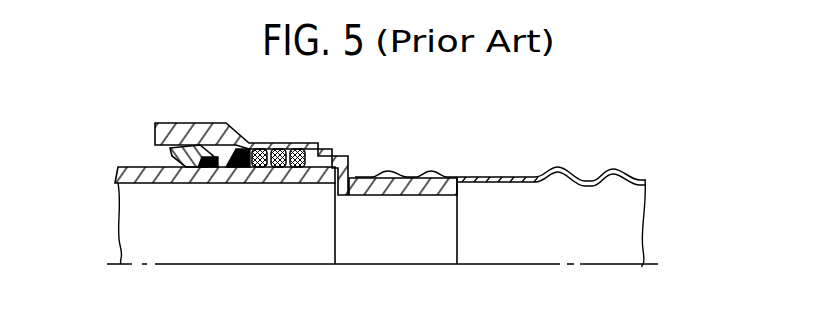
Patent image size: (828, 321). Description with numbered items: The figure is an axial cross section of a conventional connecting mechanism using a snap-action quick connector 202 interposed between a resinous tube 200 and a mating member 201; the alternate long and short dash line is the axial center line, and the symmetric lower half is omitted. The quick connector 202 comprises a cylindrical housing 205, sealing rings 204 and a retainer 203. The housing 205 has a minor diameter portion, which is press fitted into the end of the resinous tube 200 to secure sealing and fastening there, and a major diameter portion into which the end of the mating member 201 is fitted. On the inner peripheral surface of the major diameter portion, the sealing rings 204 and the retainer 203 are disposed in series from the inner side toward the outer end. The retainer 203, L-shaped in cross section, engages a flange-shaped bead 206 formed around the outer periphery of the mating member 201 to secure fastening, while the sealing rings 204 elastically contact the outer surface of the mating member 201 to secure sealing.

The resinous tube 200 is at (622, 217).
The mating member 201 is at (142, 208).
The quick connector 202 is at (226, 184).
The retainer 203 is at (171, 151).
The sealing rings 204 is at (273, 146).
The housing 205 is at (198, 122).
The flange-shaped bead 206 is at (205, 167).